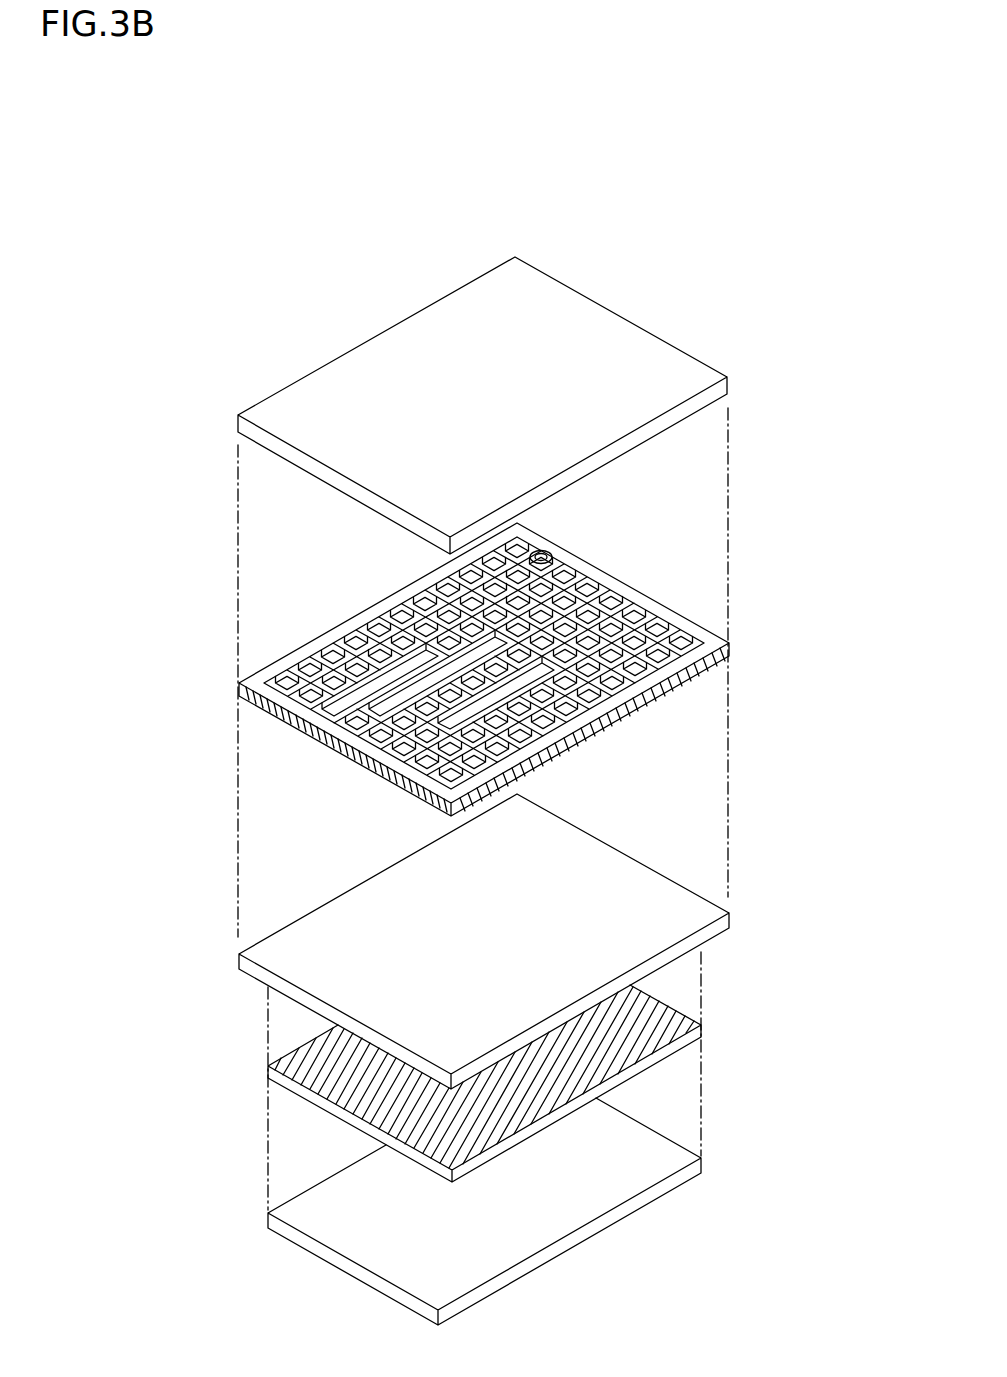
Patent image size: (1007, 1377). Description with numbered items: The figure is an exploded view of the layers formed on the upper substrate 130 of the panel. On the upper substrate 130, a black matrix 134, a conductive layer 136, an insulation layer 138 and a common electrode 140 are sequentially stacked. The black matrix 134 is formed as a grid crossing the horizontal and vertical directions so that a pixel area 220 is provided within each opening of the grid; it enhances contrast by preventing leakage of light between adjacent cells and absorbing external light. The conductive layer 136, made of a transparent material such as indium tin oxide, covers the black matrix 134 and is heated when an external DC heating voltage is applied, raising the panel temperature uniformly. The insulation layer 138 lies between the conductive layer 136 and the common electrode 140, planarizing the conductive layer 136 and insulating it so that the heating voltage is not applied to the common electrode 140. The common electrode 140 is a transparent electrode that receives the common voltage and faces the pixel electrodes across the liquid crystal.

The upper substrate 130 is at (728, 383).
The black matrix 134 is at (633, 591).
The pixel area 220 is at (552, 550).
The conductive layer 136 is at (638, 876).
The insulation layer 138 is at (665, 1018).
The common electrode 140 is at (633, 1203).